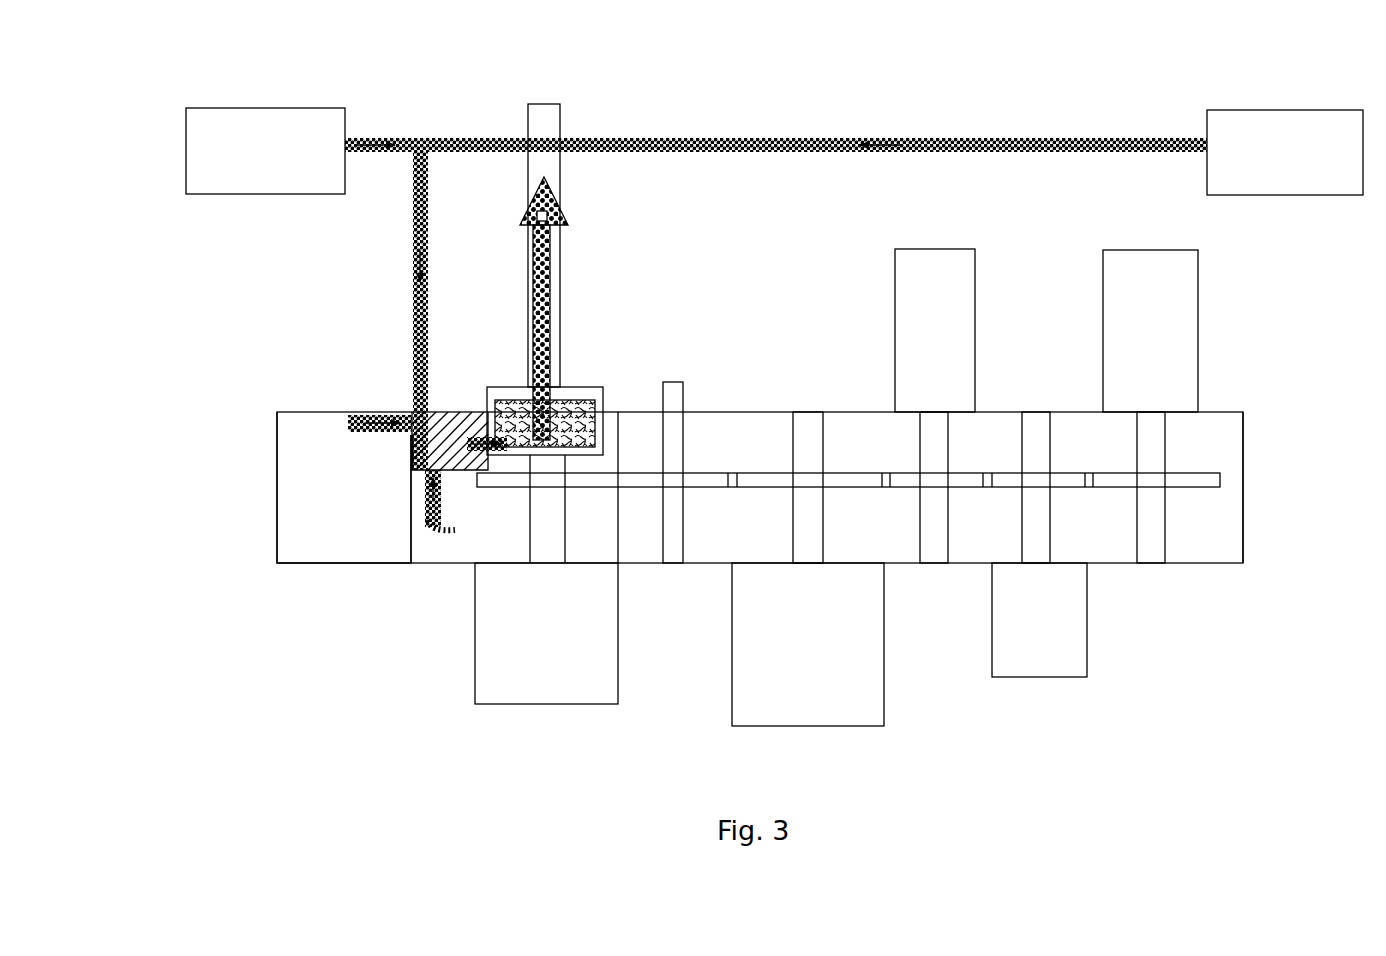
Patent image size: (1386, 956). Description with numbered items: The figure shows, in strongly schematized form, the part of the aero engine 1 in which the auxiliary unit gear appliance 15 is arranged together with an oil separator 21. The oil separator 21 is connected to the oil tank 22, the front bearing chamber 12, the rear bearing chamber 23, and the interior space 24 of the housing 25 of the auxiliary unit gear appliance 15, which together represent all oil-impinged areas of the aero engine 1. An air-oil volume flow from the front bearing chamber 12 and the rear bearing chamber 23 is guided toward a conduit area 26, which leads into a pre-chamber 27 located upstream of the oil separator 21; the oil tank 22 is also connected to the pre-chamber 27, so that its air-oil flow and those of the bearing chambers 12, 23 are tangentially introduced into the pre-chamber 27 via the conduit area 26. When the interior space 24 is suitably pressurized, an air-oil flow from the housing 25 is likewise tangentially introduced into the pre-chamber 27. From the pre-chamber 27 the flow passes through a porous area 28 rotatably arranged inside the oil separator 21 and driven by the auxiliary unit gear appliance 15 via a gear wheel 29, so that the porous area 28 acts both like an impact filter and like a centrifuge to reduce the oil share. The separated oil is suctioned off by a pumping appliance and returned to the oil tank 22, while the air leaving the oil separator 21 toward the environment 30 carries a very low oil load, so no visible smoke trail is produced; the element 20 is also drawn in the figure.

The aero engine 1 is at (160, 203).
The front bearing chamber 12 is at (278, 122).
The rear bearing chamber 23 is at (1277, 138).
The environment 30 is at (531, 73).
The conduit area 26 is at (415, 215).
The pre-chamber 27 is at (450, 412).
The porous area 28 is at (592, 428).
The oil separator 21 is at (592, 373).
The gear wheel 29 is at (535, 527).
The oil tank 22 is at (290, 522).
The interior space 24 is at (1230, 445).
The housing 25 is at (1245, 477).
The heating element 20 is at (1028, 684).
The auxiliary unit gear appliance 15 is at (1127, 585).